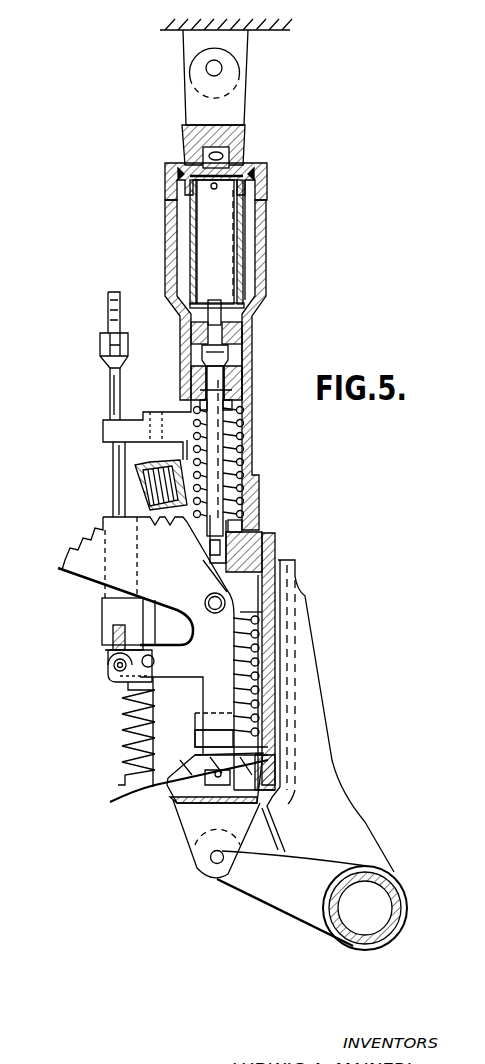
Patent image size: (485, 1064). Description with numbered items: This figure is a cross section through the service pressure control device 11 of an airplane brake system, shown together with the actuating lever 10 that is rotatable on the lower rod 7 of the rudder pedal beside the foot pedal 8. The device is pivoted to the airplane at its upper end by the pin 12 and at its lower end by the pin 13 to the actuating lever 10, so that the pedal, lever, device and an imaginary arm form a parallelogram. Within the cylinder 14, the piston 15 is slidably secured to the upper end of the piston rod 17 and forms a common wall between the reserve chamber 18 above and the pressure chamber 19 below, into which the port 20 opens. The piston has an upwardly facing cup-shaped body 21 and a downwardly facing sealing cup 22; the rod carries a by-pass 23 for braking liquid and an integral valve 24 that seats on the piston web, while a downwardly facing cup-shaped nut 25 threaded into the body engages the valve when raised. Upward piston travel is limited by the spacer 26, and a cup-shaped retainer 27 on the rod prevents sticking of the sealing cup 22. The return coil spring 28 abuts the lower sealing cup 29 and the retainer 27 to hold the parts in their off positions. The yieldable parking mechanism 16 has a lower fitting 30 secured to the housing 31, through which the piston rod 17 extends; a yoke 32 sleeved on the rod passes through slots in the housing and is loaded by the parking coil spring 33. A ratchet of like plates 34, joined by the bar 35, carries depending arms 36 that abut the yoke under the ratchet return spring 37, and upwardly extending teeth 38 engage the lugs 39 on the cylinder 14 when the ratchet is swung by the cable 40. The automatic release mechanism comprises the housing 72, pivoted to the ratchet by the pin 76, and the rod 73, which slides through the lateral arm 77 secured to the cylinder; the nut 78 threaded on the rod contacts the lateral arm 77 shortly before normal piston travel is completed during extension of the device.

The lower rod 7 is at (405, 930).
The foot pedal 8 is at (297, 568).
The actuating lever 10 is at (276, 896).
The service pressure control device 11 is at (265, 269).
The pin 12 is at (220, 68).
The pin 13 is at (214, 863).
The cylinder 14 is at (266, 228).
The piston 15 is at (242, 333).
The yieldable parking mechanism 16 is at (280, 635).
The piston rod 17 is at (223, 455).
The reserve chamber 18 is at (245, 249).
The pressure chamber 19 is at (238, 437).
The port 20 is at (145, 498).
The cup-shaped body 21 is at (258, 342).
The sealing cup 22 is at (190, 375).
The by-pass 23 is at (244, 380).
The valve 24 is at (200, 347).
The cup-shaped nut 25 is at (196, 326).
The spacer 26 is at (237, 217).
The cup-shaped retainer 27 is at (241, 413).
The return coil spring 28 is at (244, 487).
The sealing cup 29 is at (258, 532).
The lower fitting 30 is at (193, 828).
The housing 31 is at (277, 750).
The yoke 32 is at (195, 783).
The parking coil spring 33 is at (270, 667).
The plates 34 is at (90, 568).
The bar 35 is at (108, 667).
The depending arms 36 is at (218, 688).
The ratchet return spring 37 is at (122, 742).
The teeth 38 is at (80, 550).
The lugs 39 is at (240, 523).
The cable 40 is at (121, 640).
The housing 72 is at (103, 592).
The rod 73 is at (112, 387).
The pin 76 is at (110, 660).
The lateral arm 77 is at (118, 432).
The nut 78 is at (100, 346).